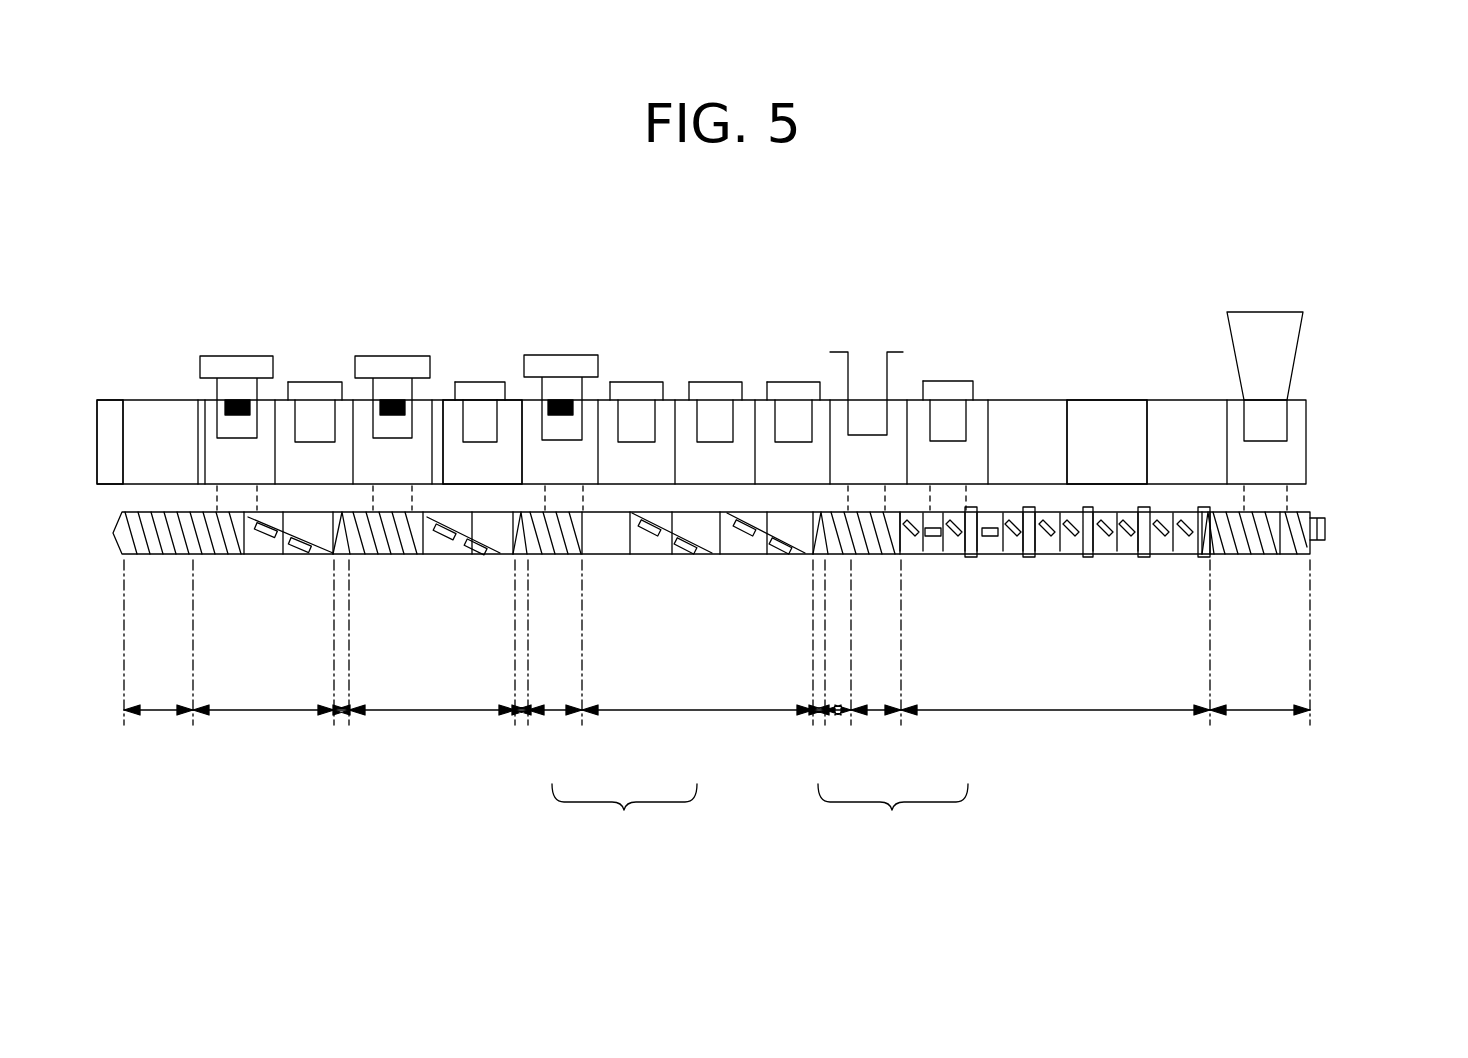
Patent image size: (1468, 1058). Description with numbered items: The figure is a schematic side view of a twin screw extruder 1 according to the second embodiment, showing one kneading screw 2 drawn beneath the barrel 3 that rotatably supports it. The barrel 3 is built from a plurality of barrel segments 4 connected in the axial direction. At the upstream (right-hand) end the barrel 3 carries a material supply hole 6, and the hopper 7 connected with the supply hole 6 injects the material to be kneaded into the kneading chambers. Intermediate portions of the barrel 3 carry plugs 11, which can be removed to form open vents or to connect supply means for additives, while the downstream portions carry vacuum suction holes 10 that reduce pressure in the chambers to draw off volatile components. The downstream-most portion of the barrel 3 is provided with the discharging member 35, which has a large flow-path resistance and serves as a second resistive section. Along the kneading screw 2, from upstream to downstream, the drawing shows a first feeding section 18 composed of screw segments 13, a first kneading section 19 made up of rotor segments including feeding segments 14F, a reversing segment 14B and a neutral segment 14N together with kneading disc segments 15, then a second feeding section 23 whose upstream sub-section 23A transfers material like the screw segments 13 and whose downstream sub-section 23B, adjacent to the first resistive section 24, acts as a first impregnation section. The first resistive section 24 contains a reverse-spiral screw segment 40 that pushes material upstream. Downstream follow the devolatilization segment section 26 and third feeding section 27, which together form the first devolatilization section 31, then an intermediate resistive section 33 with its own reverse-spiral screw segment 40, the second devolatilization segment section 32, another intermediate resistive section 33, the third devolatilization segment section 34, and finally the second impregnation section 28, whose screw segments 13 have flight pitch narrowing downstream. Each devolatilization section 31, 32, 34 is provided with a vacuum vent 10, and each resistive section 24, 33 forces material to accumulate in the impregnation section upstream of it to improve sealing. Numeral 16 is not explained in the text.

The twin screw extruder 1 is at (1045, 335).
The kneading screw 2 is at (1332, 525).
The barrel 3 is at (1332, 438).
The barrel segment 4 is at (513, 410).
The material supply hole 6 is at (1282, 414).
The hopper 7 is at (1278, 350).
The vacuum suction hole 10 is at (243, 366).
The plug 11 is at (718, 388).
The screw segment 13 is at (173, 553).
The reversing segment 14B is at (913, 552).
The neutral segment 14N is at (988, 552).
The feeding segment 14F is at (1017, 552).
The kneading disc segment 15 is at (1087, 552).
The rotor segment 16 is at (262, 553).
The first feeding section 18 is at (1262, 712).
The first kneading section 19 is at (1035, 712).
The second feeding section 23 is at (893, 821).
The upstream sub-section 23A is at (877, 712).
The downstream sub-section 23B is at (835, 712).
The first resistive section 24 is at (815, 712).
The devolatilization segment section 26 is at (705, 712).
The third feeding section 27 is at (553, 712).
The second impregnation section 28 is at (160, 712).
The first devolatilization section 31 is at (624, 821).
The second devolatilization segment section 32 is at (440, 712).
The intermediate resistive section 33 is at (341, 712).
The third devolatilization segment section 34 is at (270, 712).
The discharging member 35 is at (108, 404).
The reverse-spiral screw segment 40 is at (338, 555).